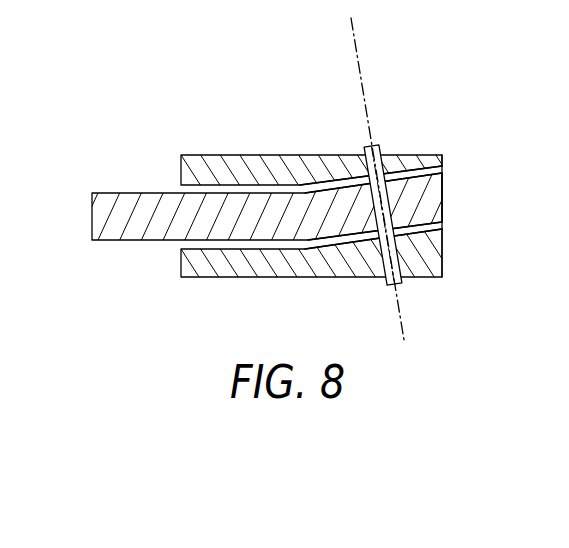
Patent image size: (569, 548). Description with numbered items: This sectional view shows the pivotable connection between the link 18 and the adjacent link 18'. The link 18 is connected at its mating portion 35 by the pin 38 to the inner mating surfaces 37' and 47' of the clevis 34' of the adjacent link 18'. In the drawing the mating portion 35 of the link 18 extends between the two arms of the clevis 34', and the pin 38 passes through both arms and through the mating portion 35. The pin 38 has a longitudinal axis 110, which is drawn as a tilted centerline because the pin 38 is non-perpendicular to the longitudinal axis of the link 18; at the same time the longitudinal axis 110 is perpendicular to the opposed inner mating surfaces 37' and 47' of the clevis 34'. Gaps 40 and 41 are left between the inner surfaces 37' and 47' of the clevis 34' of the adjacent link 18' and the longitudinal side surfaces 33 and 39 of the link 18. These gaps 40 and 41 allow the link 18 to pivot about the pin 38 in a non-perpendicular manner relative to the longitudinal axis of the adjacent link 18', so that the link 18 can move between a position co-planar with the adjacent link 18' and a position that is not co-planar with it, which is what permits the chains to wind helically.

The link 18 is at (276, 190).
The adjacent link 18' is at (292, 217).
The longitudinal side surface 33 is at (358, 247).
The clevis 34' is at (502, 197).
The mating portion 35 is at (443, 186).
The inner mating surface 37' is at (406, 256).
The pin 38 is at (373, 143).
The longitudinal side surface 39 is at (341, 181).
The gap 40 is at (448, 223).
The gap 41 is at (449, 167).
The inner mating surface 47' is at (397, 147).
The longitudinal axis 110 is at (360, 57).